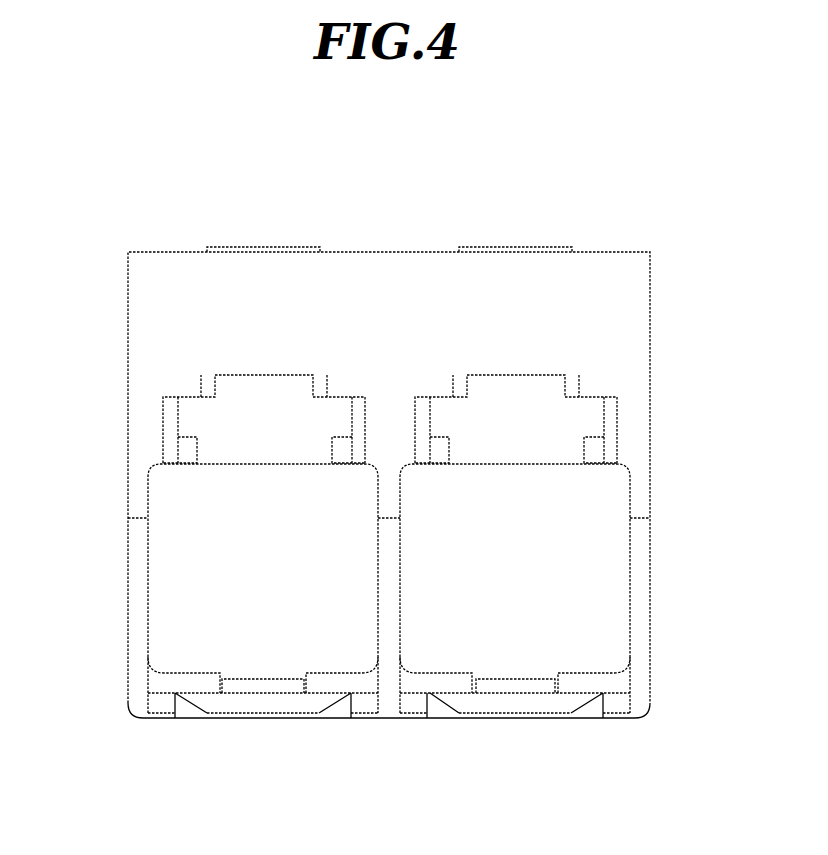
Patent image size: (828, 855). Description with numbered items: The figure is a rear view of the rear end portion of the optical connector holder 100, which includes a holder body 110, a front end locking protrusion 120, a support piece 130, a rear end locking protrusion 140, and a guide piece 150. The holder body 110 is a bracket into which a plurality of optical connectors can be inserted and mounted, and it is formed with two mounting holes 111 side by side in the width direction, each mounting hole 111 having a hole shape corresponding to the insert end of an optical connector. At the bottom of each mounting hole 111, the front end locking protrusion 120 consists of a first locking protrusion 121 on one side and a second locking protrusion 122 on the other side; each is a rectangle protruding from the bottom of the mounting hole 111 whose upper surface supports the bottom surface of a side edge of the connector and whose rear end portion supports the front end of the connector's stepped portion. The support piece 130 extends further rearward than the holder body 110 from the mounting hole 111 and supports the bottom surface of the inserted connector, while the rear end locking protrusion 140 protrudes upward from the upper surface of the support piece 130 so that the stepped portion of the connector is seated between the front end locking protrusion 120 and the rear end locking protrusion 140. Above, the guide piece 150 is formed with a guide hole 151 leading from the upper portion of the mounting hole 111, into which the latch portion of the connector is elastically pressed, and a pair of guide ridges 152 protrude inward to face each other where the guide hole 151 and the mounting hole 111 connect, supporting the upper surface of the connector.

The optical connector holder 100 is at (468, 217).
The holder body 110 is at (138, 540).
The mounting hole 111 is at (151, 568).
The front end locking protrusion 120 is at (568, 772).
The first locking protrusion 121 is at (460, 685).
The second locking protrusion 122 is at (572, 685).
The support piece 130 is at (203, 696).
The rear end locking protrusion 140 is at (268, 686).
The guide piece 150 is at (636, 323).
The guide hole 151 is at (170, 410).
The guide ridge 152 is at (343, 453).